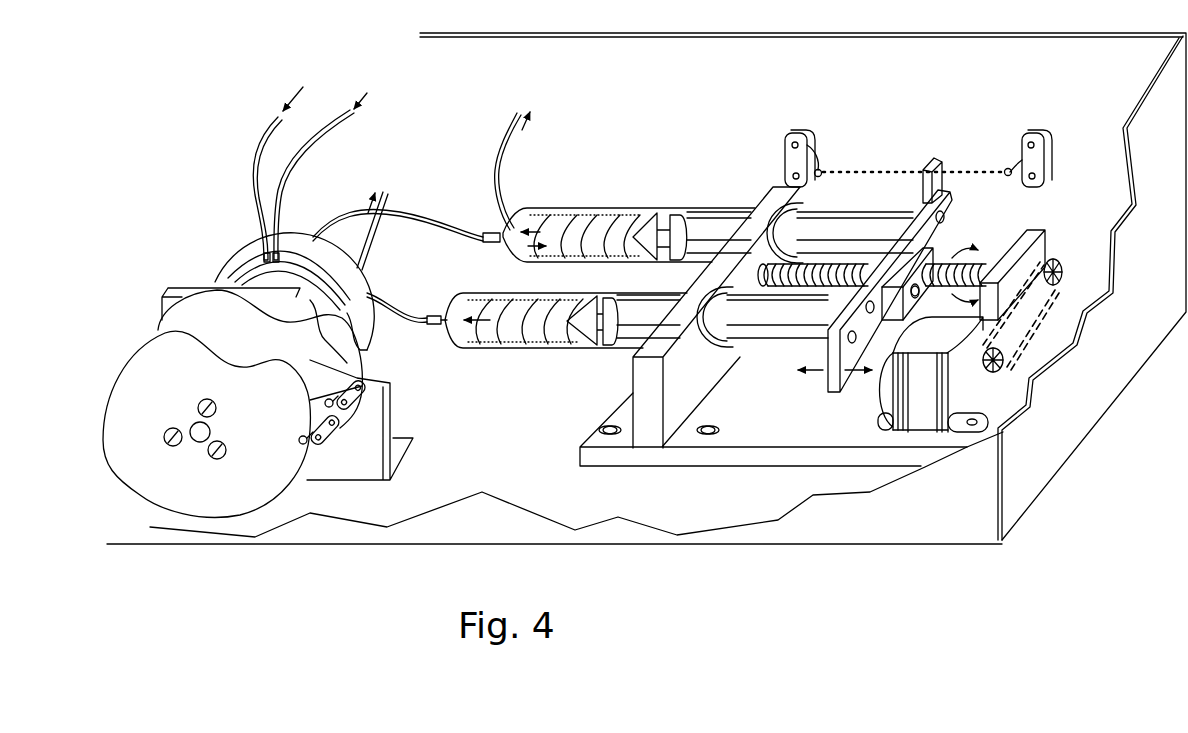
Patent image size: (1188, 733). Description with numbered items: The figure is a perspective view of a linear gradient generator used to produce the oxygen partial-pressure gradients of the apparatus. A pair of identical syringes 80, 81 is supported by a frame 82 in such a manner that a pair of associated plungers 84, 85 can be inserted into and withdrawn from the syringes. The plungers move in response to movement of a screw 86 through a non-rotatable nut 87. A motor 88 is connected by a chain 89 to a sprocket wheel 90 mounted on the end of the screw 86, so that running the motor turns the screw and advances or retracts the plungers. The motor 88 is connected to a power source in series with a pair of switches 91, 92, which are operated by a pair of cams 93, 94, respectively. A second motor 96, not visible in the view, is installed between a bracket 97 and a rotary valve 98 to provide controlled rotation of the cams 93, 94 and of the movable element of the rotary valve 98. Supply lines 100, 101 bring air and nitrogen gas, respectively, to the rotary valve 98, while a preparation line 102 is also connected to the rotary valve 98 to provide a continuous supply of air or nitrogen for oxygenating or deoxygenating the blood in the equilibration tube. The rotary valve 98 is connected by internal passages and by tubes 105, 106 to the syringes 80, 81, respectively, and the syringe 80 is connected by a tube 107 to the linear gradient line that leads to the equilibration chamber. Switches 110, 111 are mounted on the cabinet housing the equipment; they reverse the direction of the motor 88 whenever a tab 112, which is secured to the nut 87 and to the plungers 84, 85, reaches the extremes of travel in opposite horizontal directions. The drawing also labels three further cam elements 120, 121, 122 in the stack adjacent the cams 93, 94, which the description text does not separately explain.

The syringe 80 is at (603, 209).
The syringe 81 is at (535, 351).
The frame 82 is at (683, 455).
The plunger 84 is at (850, 210).
The plunger 85 is at (772, 343).
The screw 86 is at (983, 260).
The non-rotatable nut 87 is at (948, 224).
The motor 88 is at (973, 384).
The chain 89 is at (1062, 282).
The sprocket wheel 90 is at (1058, 266).
The switch 91 is at (333, 440).
The switch 92 is at (367, 397).
The cam 93 is at (133, 473).
The cam 94 is at (290, 343).
The second motor 96 is at (247, 280).
The bracket 97 is at (165, 293).
The rotary valve 98 is at (297, 236).
The supply line 100 is at (328, 120).
The supply line 101 is at (270, 120).
The preparation line 102 is at (390, 205).
The tube 105 is at (483, 244).
The tube 106 is at (425, 310).
The tube 107 is at (497, 170).
The switch 110 is at (798, 128).
The switch 111 is at (1038, 130).
The tab 112 is at (938, 158).
The cam 120 is at (348, 318).
The cam 121 is at (355, 277).
The cam 122 is at (327, 268).